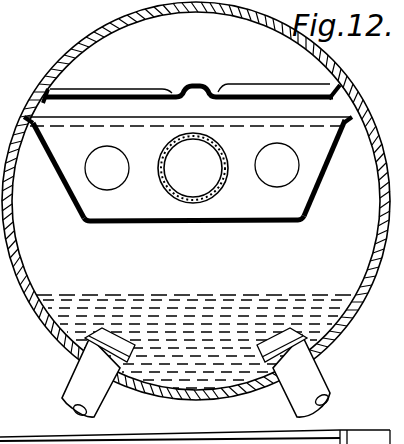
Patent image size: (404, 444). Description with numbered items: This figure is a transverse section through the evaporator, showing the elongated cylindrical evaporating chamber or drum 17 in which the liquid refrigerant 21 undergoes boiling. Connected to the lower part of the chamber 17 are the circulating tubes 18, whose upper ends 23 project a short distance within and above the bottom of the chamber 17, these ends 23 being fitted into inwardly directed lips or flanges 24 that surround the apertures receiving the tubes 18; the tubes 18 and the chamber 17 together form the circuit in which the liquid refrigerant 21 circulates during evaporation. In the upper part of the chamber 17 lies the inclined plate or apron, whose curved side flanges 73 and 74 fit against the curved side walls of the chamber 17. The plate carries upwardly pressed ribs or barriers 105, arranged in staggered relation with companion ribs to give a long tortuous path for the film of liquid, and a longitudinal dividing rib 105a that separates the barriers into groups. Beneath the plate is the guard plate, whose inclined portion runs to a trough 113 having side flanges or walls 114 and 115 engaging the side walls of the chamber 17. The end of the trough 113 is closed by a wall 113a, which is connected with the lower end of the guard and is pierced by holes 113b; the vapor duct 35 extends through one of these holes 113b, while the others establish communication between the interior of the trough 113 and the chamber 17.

The evaporating chamber or drum 17 is at (374, 70).
The circulating tubes 18 is at (97, 391).
The liquid refrigerant 21 is at (216, 286).
The upper ends of the tubes 23 is at (290, 328).
The inwardly directed lips or flanges 24 is at (311, 352).
The vapor duct 35 is at (165, 183).
The curved side flange 73 is at (38, 107).
The curved side flange 74 is at (342, 100).
The upwardly pressed ribs or barriers 105 is at (162, 65).
The dividing rib 105a is at (196, 84).
The trough 113 is at (224, 249).
The end wall of trough 113a is at (310, 248).
The holes 113b is at (148, 145).
The side flange or wall of trough 114 is at (63, 178).
The side flange or wall of trough 115 is at (366, 212).